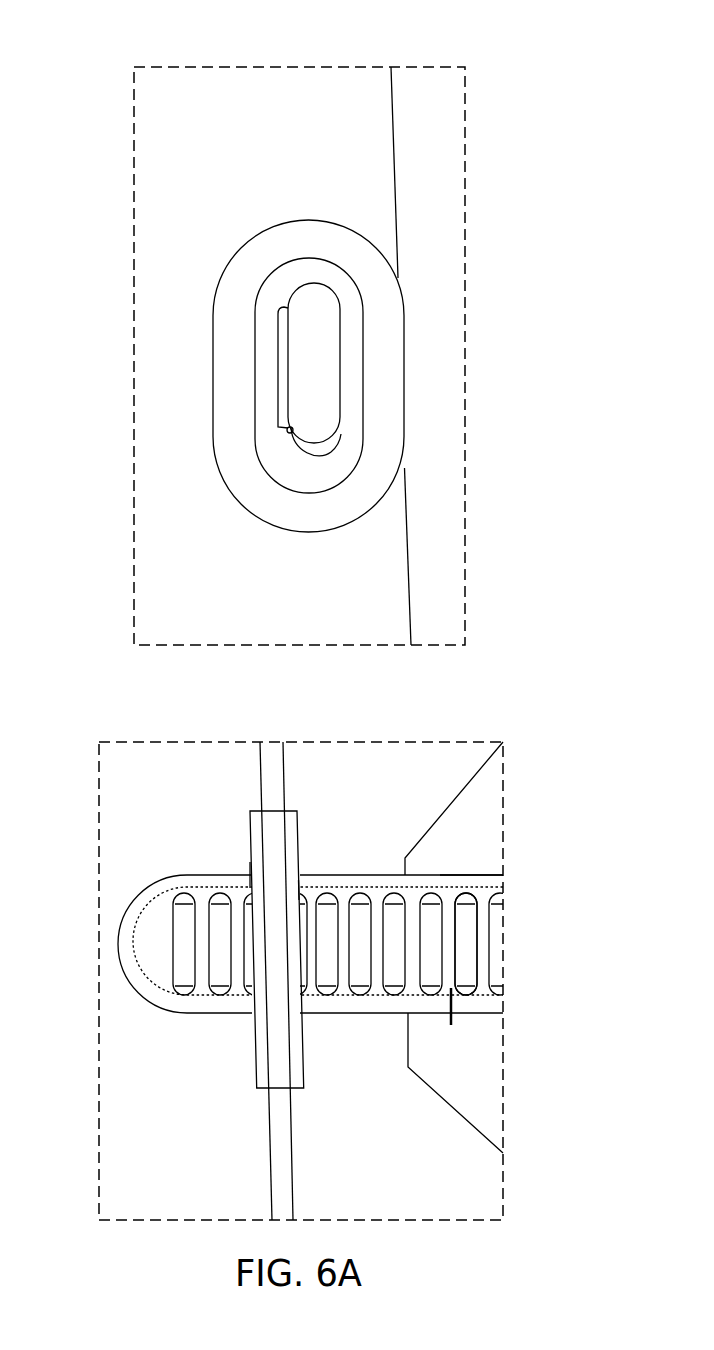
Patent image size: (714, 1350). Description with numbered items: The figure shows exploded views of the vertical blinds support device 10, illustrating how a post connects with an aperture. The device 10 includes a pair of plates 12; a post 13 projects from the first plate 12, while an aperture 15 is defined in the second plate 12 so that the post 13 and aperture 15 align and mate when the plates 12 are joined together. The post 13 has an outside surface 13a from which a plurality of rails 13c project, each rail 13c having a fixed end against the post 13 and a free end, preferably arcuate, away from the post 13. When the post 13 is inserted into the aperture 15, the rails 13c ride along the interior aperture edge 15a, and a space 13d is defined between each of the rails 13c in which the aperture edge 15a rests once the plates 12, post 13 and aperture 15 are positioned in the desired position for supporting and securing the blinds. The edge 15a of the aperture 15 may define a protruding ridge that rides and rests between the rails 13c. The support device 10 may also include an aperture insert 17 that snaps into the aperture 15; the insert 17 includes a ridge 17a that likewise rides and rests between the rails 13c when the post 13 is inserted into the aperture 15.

The vertical blinds support device 10 is at (114, 60).
The plate 12 is at (370, 182).
The post 13 is at (323, 401).
The outside surface 13a is at (490, 875).
The rail 13c is at (468, 913).
The space 13d is at (446, 1019).
The aperture 15 is at (251, 874).
The interior aperture edge 15a is at (290, 378).
The aperture insert 17 is at (405, 341).
The ridge 17a is at (299, 888).